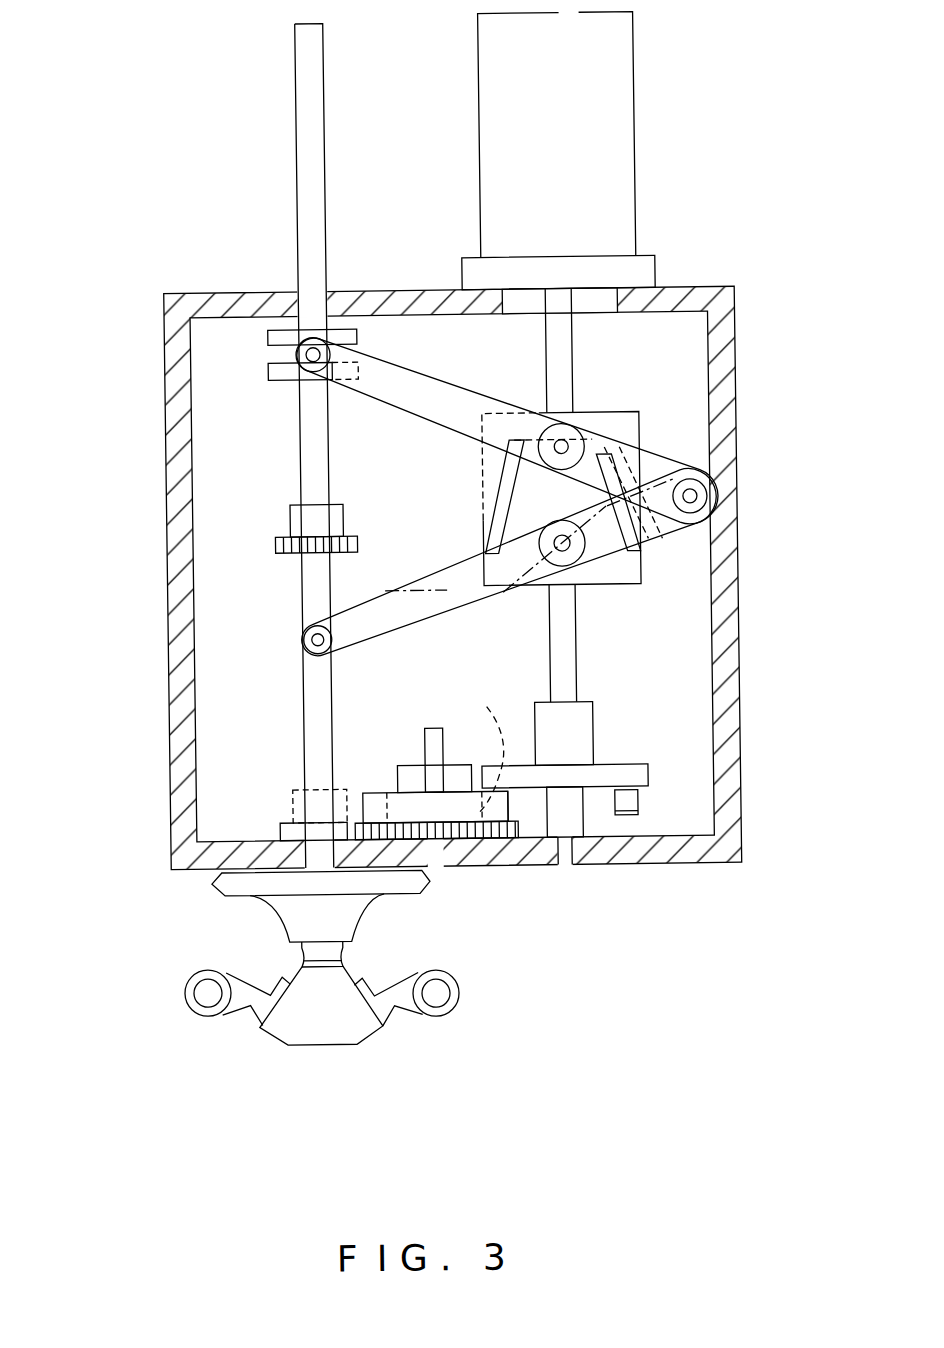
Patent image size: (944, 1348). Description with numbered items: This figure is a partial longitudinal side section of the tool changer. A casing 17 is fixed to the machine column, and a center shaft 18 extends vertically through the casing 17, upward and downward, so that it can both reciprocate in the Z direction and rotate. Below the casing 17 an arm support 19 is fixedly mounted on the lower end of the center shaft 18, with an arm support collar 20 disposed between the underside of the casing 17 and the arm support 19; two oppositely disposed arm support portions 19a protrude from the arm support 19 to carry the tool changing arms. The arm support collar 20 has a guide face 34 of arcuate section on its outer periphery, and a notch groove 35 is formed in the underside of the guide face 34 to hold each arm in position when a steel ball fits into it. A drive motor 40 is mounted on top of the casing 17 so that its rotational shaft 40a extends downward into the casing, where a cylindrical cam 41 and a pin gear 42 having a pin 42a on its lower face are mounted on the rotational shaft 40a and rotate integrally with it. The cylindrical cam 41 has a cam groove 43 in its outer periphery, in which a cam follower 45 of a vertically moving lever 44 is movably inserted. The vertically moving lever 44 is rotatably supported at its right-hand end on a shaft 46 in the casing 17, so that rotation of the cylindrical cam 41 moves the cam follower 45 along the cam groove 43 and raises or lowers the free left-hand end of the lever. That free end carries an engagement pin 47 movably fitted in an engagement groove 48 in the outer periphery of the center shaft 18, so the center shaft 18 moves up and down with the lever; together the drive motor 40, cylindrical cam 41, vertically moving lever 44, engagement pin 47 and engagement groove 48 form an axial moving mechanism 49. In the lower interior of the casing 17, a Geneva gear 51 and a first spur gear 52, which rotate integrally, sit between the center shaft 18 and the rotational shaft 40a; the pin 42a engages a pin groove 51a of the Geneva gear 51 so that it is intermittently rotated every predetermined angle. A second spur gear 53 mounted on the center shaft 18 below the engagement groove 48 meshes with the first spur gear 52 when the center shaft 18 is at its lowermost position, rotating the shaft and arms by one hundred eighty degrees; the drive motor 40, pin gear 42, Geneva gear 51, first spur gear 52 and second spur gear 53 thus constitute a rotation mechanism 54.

The casing 17 is at (169, 296).
The center shaft 18 is at (301, 128).
The arm support 19 is at (319, 1028).
The arm support portions 19a is at (245, 1003).
The arm support collar 20 is at (221, 887).
The guide face 34 is at (268, 910).
The notch groove 35 is at (298, 952).
The drive motor 40 is at (633, 65).
The rotational shaft 40a is at (563, 305).
The cylindrical cam 41 is at (642, 422).
The pin gear 42 is at (647, 777).
The pin 42a is at (637, 803).
The cam groove 43 is at (496, 514).
The vertically moving lever 44 is at (465, 398).
The cam follower 45 is at (564, 446).
The shaft 46 is at (708, 499).
The engagement pin 47 is at (300, 378).
The engagement groove 48 is at (271, 352).
The axial moving mechanism 49 is at (681, 346).
The Geneva gear 51 is at (449, 810).
The pin groove 51a is at (491, 740).
The first spur gear 52 is at (506, 845).
The second spur gear 53 is at (291, 543).
The rotation mechanism 54 is at (620, 747).